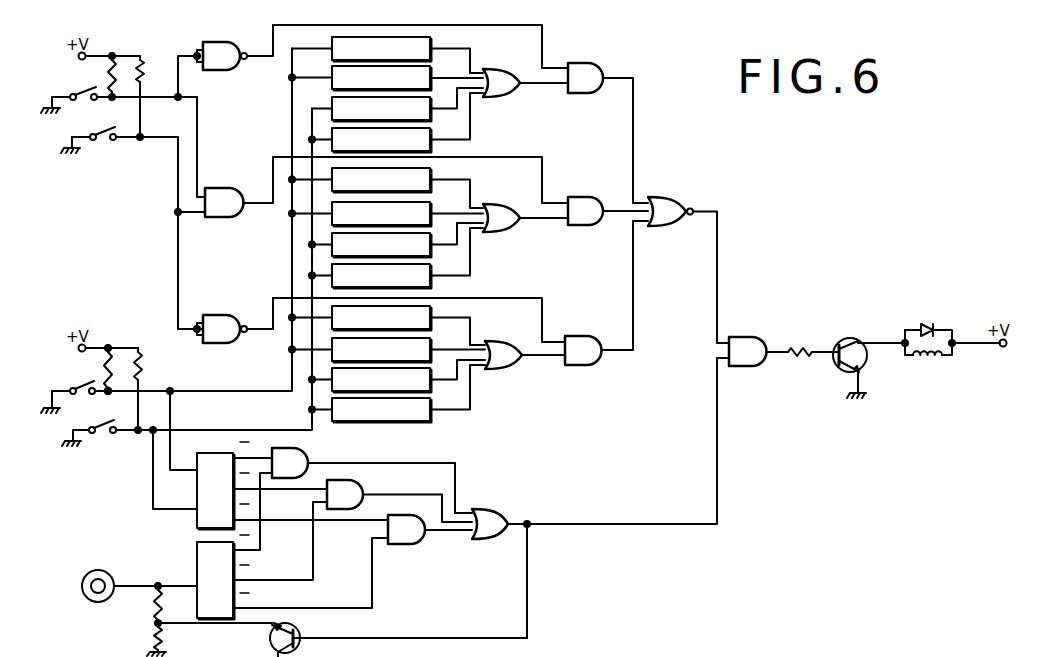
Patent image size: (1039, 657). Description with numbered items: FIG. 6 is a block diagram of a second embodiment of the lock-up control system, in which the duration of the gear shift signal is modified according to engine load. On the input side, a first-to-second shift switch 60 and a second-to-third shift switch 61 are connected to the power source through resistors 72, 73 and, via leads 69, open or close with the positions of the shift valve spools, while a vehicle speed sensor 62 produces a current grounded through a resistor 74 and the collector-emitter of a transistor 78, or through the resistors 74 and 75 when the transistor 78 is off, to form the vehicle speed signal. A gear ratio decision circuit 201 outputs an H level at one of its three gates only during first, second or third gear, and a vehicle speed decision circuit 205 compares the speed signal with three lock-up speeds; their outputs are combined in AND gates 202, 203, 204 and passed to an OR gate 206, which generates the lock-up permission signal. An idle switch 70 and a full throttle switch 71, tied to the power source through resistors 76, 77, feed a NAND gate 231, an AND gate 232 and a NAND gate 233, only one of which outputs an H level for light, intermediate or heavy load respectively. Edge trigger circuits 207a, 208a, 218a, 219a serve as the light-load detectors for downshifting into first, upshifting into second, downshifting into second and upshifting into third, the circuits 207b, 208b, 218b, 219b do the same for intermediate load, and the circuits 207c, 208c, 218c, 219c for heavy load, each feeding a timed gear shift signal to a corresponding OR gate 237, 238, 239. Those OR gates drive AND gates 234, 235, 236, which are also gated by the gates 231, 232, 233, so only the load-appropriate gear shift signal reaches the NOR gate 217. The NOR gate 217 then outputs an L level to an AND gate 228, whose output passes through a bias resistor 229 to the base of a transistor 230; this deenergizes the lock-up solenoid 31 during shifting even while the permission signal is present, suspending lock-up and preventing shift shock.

The lock-up solenoid 31 is at (928, 359).
The 1-2 shift switch 60 is at (88, 386).
The 2-3 shift switch 61 is at (102, 438).
The vehicle speed sensor 62 is at (99, 569).
The leads 69 is at (138, 391).
The idle switch 70 is at (90, 91).
The full throttle switch 71 is at (102, 143).
The resistor 72 is at (111, 362).
The resistor 73 is at (142, 374).
The resistor 74 is at (154, 601).
The resistor 75 is at (154, 635).
The resistor 76 is at (113, 72).
The resistor 77 is at (141, 72).
The transistor 78 is at (300, 633).
The gear ratio decision circuit 201 is at (197, 527).
The AND gate 202 is at (306, 453).
The AND gate 203 is at (361, 488).
The AND gate 204 is at (416, 545).
The vehicle speed decision circuit 205 is at (197, 569).
The OR gate 206 is at (484, 540).
The edge trigger circuit 207a is at (431, 47).
The edge trigger circuit 207b is at (432, 177).
The edge trigger circuit 207c is at (431, 313).
The edge trigger circuit 208a is at (432, 70).
The edge trigger circuit 208b is at (432, 205).
The edge trigger circuit 208c is at (432, 342).
The NOR gate 217 is at (680, 191).
The edge trigger circuit 218a is at (432, 115).
The edge trigger circuit 218b is at (432, 250).
The edge trigger circuit 218c is at (432, 386).
The edge trigger circuit 219a is at (432, 146).
The edge trigger circuit 219b is at (432, 282).
The edge trigger circuit 219c is at (431, 418).
The AND gate 228 is at (760, 337).
The bias resistor 229 is at (800, 357).
The transistor 230 is at (850, 338).
The NAND gate 231 is at (227, 71).
The AND gate 232 is at (222, 218).
The NAND gate 233 is at (220, 344).
The AND gate 234 is at (600, 69).
The AND gate 235 is at (590, 227).
The AND gate 236 is at (588, 367).
The OR gate 237 is at (519, 94).
The OR gate 238 is at (519, 230).
The OR gate 239 is at (521, 367).